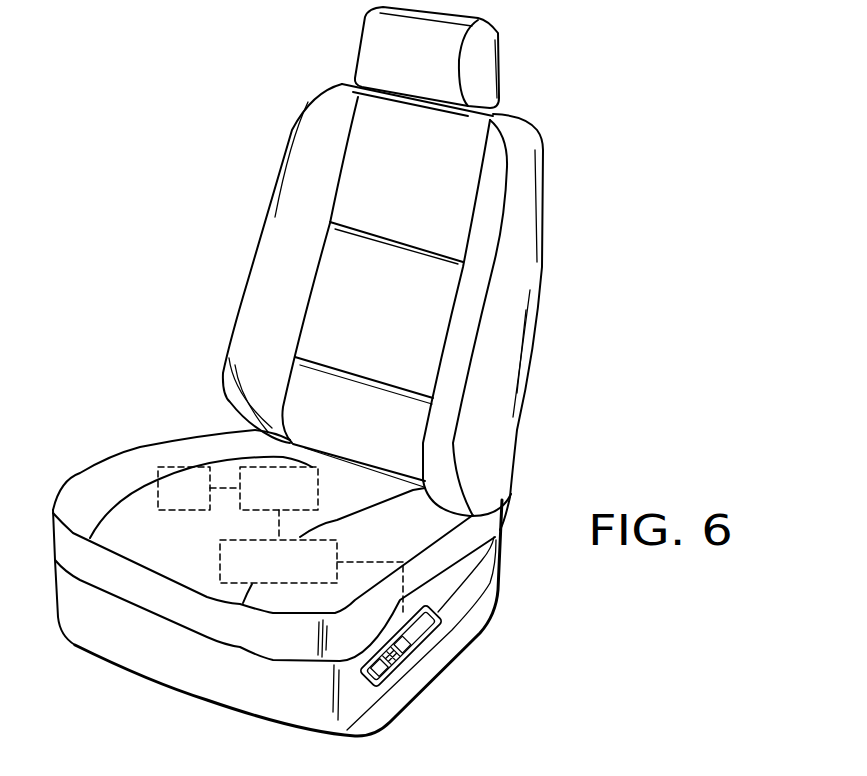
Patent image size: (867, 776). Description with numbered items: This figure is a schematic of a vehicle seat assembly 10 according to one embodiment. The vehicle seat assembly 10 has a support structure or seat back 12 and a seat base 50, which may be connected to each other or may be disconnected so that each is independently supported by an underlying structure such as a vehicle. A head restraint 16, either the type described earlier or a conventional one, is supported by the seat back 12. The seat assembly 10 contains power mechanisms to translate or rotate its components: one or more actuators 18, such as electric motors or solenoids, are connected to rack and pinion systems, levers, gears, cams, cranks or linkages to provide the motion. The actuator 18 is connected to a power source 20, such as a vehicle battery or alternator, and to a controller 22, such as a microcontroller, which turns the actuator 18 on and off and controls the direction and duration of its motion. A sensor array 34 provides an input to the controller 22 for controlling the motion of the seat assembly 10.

The vehicle seat assembly 10 is at (640, 85).
The seat back 12 is at (517, 262).
The head restraint 16 is at (483, 70).
The actuator 18 is at (320, 487).
The power source 20 is at (200, 504).
The controller 22 is at (283, 583).
The sensor array 34 is at (427, 625).
The seat base 50 is at (220, 452).